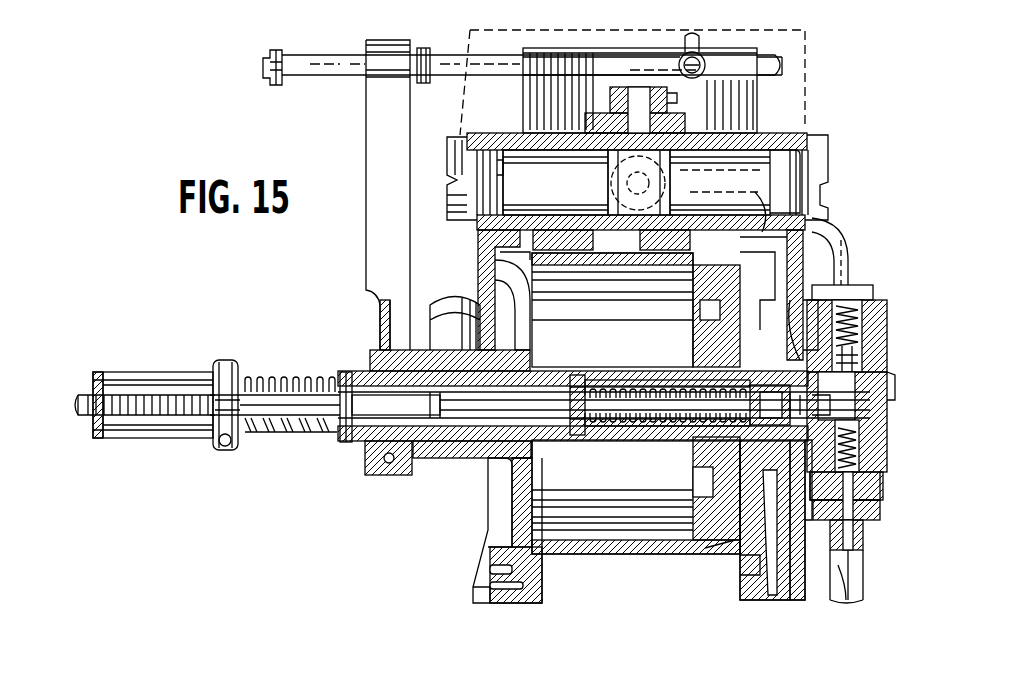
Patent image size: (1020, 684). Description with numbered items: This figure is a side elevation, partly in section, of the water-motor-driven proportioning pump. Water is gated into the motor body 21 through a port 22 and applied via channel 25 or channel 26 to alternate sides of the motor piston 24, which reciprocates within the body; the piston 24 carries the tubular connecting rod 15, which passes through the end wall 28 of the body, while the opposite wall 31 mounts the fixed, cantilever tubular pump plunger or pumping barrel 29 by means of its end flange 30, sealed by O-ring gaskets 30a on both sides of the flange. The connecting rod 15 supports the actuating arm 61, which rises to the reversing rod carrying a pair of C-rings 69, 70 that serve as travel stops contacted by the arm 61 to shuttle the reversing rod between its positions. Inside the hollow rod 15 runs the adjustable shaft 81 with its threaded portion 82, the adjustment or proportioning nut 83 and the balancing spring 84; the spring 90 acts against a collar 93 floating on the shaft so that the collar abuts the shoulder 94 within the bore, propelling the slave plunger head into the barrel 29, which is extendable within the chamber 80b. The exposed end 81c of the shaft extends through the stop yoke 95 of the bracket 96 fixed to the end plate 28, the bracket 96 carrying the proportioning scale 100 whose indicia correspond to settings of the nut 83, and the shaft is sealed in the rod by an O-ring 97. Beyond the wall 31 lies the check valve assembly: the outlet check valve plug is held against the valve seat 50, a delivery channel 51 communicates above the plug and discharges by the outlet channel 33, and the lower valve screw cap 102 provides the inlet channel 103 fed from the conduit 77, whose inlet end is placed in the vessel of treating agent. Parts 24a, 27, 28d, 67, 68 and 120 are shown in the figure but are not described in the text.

The connecting rod 15 is at (583, 385).
The motor body 21 is at (616, 556).
The port 22 is at (510, 225).
The motor piston 24 is at (735, 277).
The passage 24a is at (685, 578).
The channel 25 is at (495, 260).
The channel 26 is at (780, 258).
The piston 27 is at (742, 184).
The end wall 28 is at (532, 470).
The body flange 28d is at (470, 458).
The tubular pump plunger 29 is at (630, 428).
The end flange 30 is at (779, 480).
The O-ring gaskets 30a is at (800, 335).
The opposite wall 31 is at (740, 578).
The outlet channel 33 is at (850, 248).
The valve seat 50 is at (868, 476).
The delivery channel 51 is at (862, 368).
The actuating arm 61 is at (366, 175).
The ring 67 is at (698, 54).
The motor 68 is at (550, 60).
The C-ring 69 is at (284, 60).
The C-ring 70 is at (423, 50).
The conduit 77 is at (838, 582).
The chamber 80b is at (652, 390).
The adjustable shaft 81 is at (446, 430).
The exposed end 81c is at (80, 405).
The threaded portion 82 is at (188, 392).
The adjustment nut 83 is at (216, 436).
The balancing spring 84 is at (282, 430).
The spring 90 is at (607, 385).
The collar 93 is at (590, 440).
The shoulder 94 is at (574, 378).
The stop yoke 95 is at (97, 438).
The bracket 96 is at (150, 435).
The O-ring 97 is at (360, 442).
The proportioning scale 100 is at (143, 372).
The lower valve screw cap 102 is at (864, 535).
The inlet channel 103 is at (849, 592).
The motor unit 120 is at (805, 85).